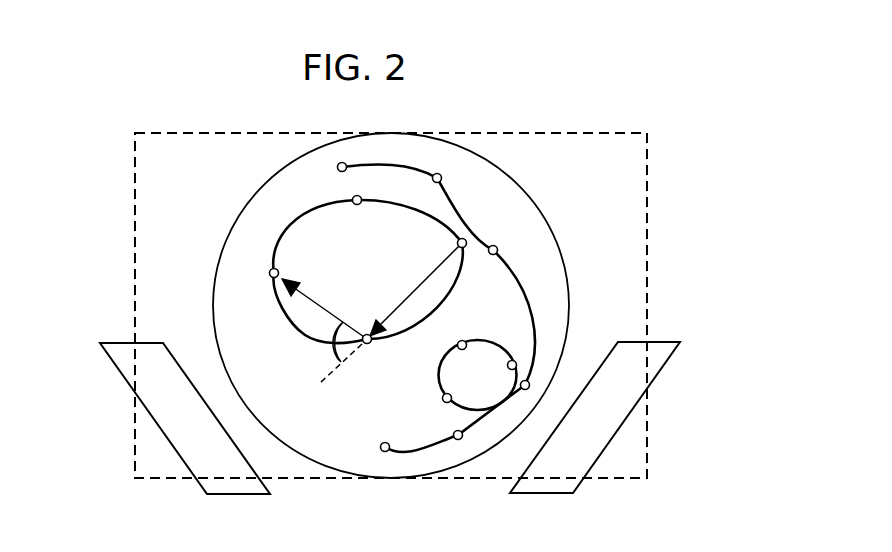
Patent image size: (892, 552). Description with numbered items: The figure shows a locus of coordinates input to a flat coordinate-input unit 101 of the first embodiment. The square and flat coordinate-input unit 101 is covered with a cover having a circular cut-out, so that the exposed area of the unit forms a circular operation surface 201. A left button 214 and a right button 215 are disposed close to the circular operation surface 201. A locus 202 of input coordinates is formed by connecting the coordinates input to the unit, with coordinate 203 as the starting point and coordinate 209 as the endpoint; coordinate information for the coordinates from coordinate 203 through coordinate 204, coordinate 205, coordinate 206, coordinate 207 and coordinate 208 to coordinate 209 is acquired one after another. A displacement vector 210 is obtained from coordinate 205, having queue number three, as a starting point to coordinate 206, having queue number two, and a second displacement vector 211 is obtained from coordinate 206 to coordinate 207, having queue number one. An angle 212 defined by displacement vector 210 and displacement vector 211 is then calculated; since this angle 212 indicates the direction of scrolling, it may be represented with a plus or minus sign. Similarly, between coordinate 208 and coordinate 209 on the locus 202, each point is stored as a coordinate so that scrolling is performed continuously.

The coordinate-input unit 101 is at (133, 172).
The circular operation surface 201 is at (233, 225).
The locus 202 is at (455, 205).
The coordinate 203 is at (338, 166).
The coordinate 204 is at (435, 174).
The coordinate 205 is at (458, 242).
The coordinate 206 is at (370, 343).
The coordinate 207 is at (272, 277).
The coordinate 208 is at (355, 204).
The coordinate 209 is at (382, 444).
The displacement vector 210 is at (418, 287).
The displacement vector 211 is at (317, 304).
The angle 212 is at (333, 353).
The left button 214 is at (148, 342).
The right button 215 is at (635, 341).